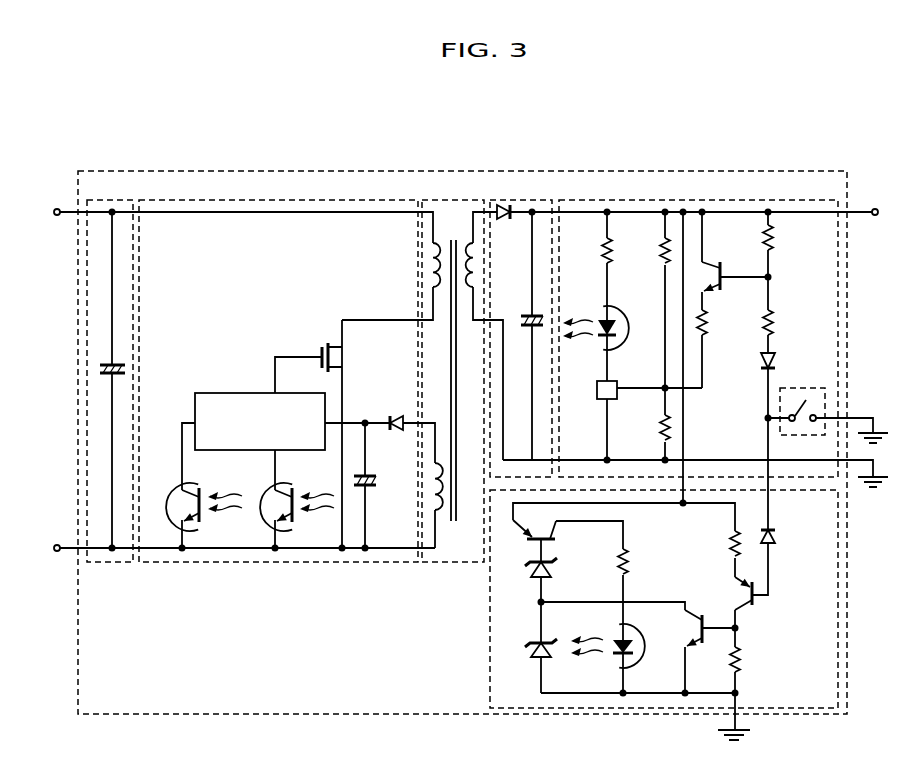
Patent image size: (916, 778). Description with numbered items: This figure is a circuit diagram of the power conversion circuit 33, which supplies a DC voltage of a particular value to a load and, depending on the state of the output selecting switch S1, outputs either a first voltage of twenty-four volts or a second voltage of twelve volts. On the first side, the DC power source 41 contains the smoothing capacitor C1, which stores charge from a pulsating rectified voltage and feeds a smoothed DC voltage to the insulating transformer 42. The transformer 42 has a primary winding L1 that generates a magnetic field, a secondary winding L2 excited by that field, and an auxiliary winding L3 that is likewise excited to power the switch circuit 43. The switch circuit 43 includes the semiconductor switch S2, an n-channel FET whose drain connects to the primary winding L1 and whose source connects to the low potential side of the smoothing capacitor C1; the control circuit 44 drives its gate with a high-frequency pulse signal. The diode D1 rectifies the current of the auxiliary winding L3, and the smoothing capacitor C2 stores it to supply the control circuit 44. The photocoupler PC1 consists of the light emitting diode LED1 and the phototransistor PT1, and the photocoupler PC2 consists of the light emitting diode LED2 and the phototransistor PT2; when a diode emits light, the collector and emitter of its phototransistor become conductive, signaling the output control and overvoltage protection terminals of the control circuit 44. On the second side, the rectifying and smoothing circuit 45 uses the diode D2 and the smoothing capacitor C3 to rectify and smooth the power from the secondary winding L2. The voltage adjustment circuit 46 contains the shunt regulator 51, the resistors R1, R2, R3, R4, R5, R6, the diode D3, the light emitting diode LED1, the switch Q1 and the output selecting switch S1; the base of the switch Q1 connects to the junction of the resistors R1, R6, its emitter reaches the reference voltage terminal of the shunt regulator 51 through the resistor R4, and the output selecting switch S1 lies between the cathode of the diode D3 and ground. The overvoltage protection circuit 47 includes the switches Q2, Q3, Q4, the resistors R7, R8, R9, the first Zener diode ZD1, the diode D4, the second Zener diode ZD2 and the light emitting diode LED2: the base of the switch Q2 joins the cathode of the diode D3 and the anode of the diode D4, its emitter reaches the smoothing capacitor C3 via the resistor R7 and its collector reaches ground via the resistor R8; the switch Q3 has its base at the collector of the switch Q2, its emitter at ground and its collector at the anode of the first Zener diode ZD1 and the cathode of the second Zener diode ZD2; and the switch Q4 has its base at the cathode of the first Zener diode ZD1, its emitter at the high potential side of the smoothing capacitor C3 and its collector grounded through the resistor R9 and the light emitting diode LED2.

The power conversion circuit 33 is at (207, 170).
The DC power source 41 is at (103, 199).
The insulating transformer 42 is at (452, 200).
The switch circuit 43 is at (350, 200).
The control circuit 44 is at (233, 392).
The rectifying and smoothing circuit 45 is at (535, 200).
The voltage adjustment circuit 46 is at (587, 200).
The overvoltage protection circuit 47 is at (488, 632).
The shunt regulator 51 is at (597, 394).
The smoothing capacitor C1 is at (111, 363).
The smoothing capacitor C2 is at (373, 472).
The smoothing capacitor C3 is at (526, 311).
The primary winding L1 is at (432, 267).
The secondary winding L2 is at (474, 267).
The auxiliary winding L3 is at (436, 498).
The diode D1 is at (395, 416).
The diode D2 is at (504, 205).
The diode D3 is at (761, 360).
The diode D4 is at (777, 540).
The first Zener diode ZD1 is at (536, 581).
The second Zener diode ZD2 is at (536, 658).
The resistor R1 is at (602, 250).
The resistor R2 is at (660, 250).
The resistor R3 is at (660, 429).
The resistor R4 is at (712, 321).
The resistor R5 is at (777, 236).
The resistor R6 is at (777, 321).
The resistor R7 is at (729, 545).
The resistor R8 is at (728, 660).
The resistor R9 is at (616, 562).
The switch Q1 is at (722, 264).
The switch Q2 is at (755, 603).
The switch Q3 is at (705, 620).
The switch Q4 is at (530, 545).
The photocoupler PC1 is at (276, 486).
The photocoupler PC2 is at (182, 486).
The phototransistor PT1 is at (295, 492).
The phototransistor PT2 is at (202, 489).
The light emitting diode LED1 is at (599, 341).
The light emitting diode LED2 is at (613, 656).
The output selecting switch S1 is at (804, 388).
The semiconductor switch S2 is at (321, 348).